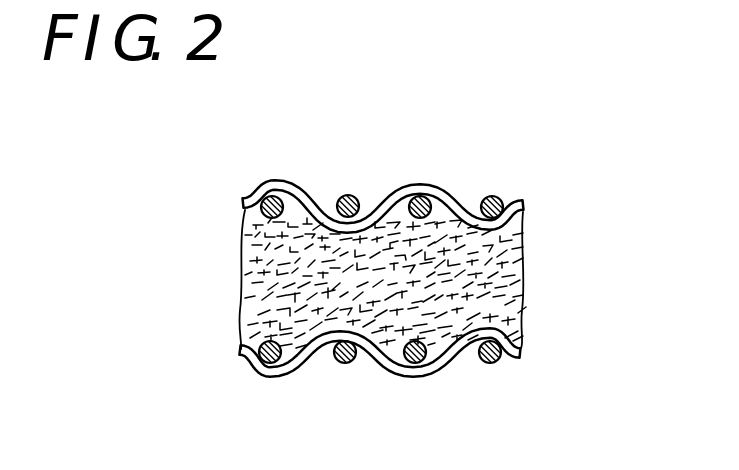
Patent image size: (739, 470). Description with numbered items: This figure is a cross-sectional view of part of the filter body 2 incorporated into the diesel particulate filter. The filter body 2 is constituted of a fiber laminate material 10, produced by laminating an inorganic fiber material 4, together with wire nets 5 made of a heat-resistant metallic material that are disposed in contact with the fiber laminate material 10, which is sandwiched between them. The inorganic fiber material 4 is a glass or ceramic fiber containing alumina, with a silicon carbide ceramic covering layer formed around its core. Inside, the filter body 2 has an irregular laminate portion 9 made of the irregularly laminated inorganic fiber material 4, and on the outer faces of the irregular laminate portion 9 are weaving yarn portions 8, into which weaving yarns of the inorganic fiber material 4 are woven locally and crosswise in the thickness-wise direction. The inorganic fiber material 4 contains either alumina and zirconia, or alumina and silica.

The filter body 2 is at (509, 204).
The inorganic fiber material 4 is at (393, 259).
The wire nets 5 is at (373, 212).
The weaving yarn portions 8 is at (297, 217).
The irregular laminate portion 9 is at (258, 283).
The fiber laminate material 10 is at (532, 240).